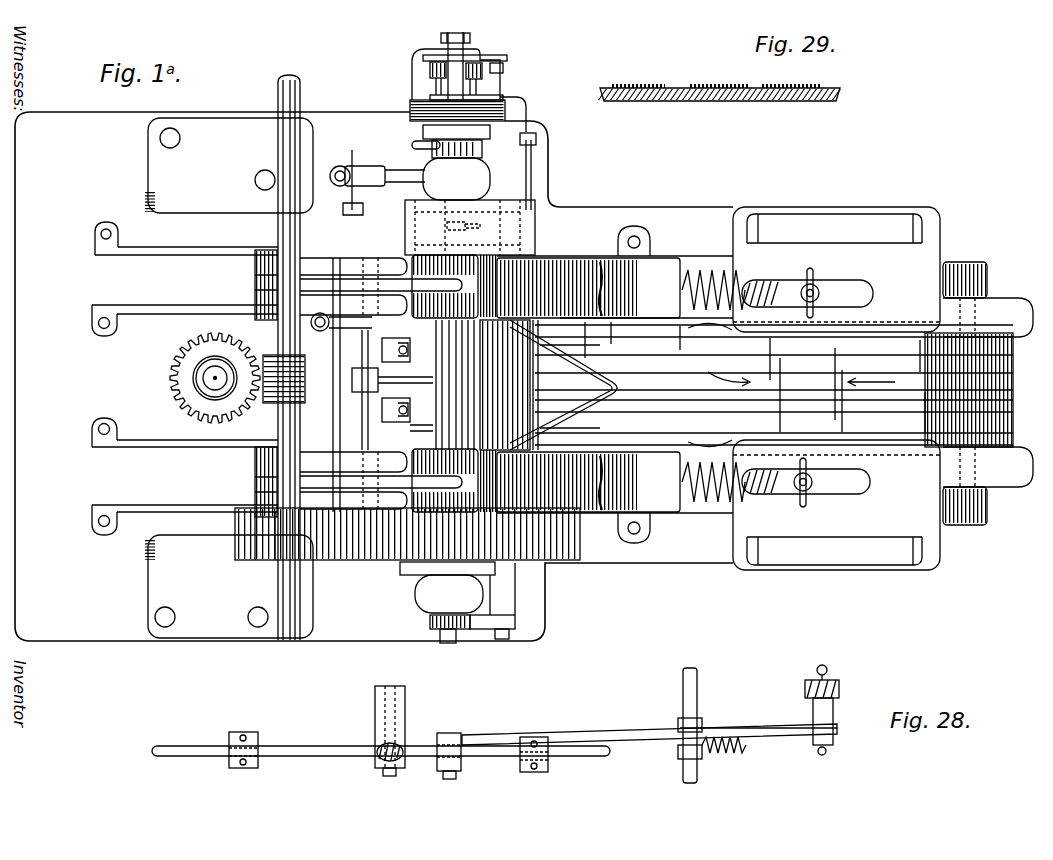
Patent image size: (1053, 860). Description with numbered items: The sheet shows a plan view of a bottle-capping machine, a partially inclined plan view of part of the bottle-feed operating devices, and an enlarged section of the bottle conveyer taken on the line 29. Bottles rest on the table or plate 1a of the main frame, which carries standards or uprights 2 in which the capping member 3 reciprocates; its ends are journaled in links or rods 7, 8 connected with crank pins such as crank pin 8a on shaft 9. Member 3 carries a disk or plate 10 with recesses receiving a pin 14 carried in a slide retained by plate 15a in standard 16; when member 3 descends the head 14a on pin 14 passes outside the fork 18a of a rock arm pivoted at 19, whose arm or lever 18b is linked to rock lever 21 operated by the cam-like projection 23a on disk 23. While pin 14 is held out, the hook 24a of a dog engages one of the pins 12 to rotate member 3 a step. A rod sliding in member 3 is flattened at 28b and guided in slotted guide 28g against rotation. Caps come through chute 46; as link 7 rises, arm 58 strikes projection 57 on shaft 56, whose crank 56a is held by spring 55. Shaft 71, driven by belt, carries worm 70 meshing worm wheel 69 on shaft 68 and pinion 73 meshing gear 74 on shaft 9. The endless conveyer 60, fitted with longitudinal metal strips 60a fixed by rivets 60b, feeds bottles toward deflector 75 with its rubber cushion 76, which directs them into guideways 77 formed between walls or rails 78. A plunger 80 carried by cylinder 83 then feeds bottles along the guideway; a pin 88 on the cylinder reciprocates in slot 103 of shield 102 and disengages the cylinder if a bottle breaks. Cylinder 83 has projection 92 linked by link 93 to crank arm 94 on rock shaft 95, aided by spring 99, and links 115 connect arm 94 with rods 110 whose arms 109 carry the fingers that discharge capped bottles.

In FIG. 1A, the table or plate 1a is at (374, 376).
In FIG. 1A, the enlargement or head 14a is at (441, 38).
In FIG. 1A, the pin 14 is at (463, 45).
In FIG. 1A, the fork 18a is at (430, 68).
In FIG. 1A, the pivot 19 is at (507, 58).
In FIG. 1A, the arm or lever 18b is at (503, 72).
In FIG. 1A, the plate 15a is at (503, 97).
In FIG. 1A, the standard 16 is at (410, 108).
In FIG. 1A, the disk or plate 10 is at (482, 132).
In FIG. 1A, the projection 57 is at (344, 177).
In FIG. 1A, the hook 24a is at (412, 145).
In FIG. 1A, the pins or projections 12 is at (432, 152).
In FIG. 1A, the arm 58 is at (385, 178).
In FIG. 1A, the link or rod 7 is at (456, 179).
In FIG. 1A, the cam-like projection 23a is at (470, 222).
In FIG. 1A, the rock lever 21 is at (532, 172).
In FIG. 1A, the disk 23 is at (535, 238).
In FIG. 1A, the shaft 71 is at (278, 150).
In FIG. 1A, the walls or rails 78 is at (178, 247).
In FIG. 1A, the guideways 77 is at (185, 386).
In FIG. 1A, the standards or uprights 2 is at (376, 383).
In FIG. 1A, the crank 56a is at (343, 279).
In FIG. 1A, the worm 70 is at (270, 355).
In FIG. 1A, the shaft 68 is at (216, 376).
In FIG. 1A, the worm wheel 69 is at (182, 392).
In FIG. 1A, the spring 55 is at (322, 331).
In FIG. 1A, the shaft 56 is at (352, 374).
In FIG. 1A, the arms 109 is at (345, 424).
In FIG. 28, the arms 109 is at (378, 760).
In FIG. 1A, the member 3 is at (405, 372).
In FIG. 1A, the shaft 9 is at (420, 433).
In FIG. 1A, the chute 46 is at (586, 300).
In FIG. 1A, the plunger 80 is at (668, 262).
In FIG. 1A, the slot 103 is at (780, 282).
In FIG. 1A, the pin 88 is at (818, 278).
In FIG. 1A, the cylinder 83 is at (823, 388).
In FIG. 1A, the shield 102 is at (836, 388).
In FIG. 1A, the bottle deflector 75 is at (574, 356).
In FIG. 1A, the section line 29 is at (660, 340).
In FIG. 1A, the cushion 76 is at (612, 382).
In FIG. 1A, the rivets 60b is at (721, 367).
In FIG. 29, the rivets 60b is at (632, 86).
In FIG. 1A, the longitudinal metal strips 60a is at (871, 366).
In FIG. 29, the longitudinal metal strips 60a is at (692, 86).
In FIG. 1A, the endless conveyer 60 is at (784, 393).
In FIG. 1A, the pinion 73 is at (257, 548).
In FIG. 1A, the gear 74 is at (348, 560).
In FIG. 1A, the link or rod 8 is at (447, 587).
In FIG. 1A, the crank pin 8a is at (430, 622).
In FIG. 1A, the slotted guide 28g is at (515, 622).
In FIG. 1A, the flattened end 28b is at (448, 643).
In FIG. 28, the reciprocative rods 110 is at (318, 757).
In FIG. 28, the links 115 is at (588, 726).
In FIG. 28, the crank arm 94 is at (678, 724).
In FIG. 28, the rock shaft 95 is at (697, 698).
In FIG. 28, the link 93 is at (766, 726).
In FIG. 28, the projection 92 is at (840, 686).
In FIG. 28, the spring 99 is at (742, 756).